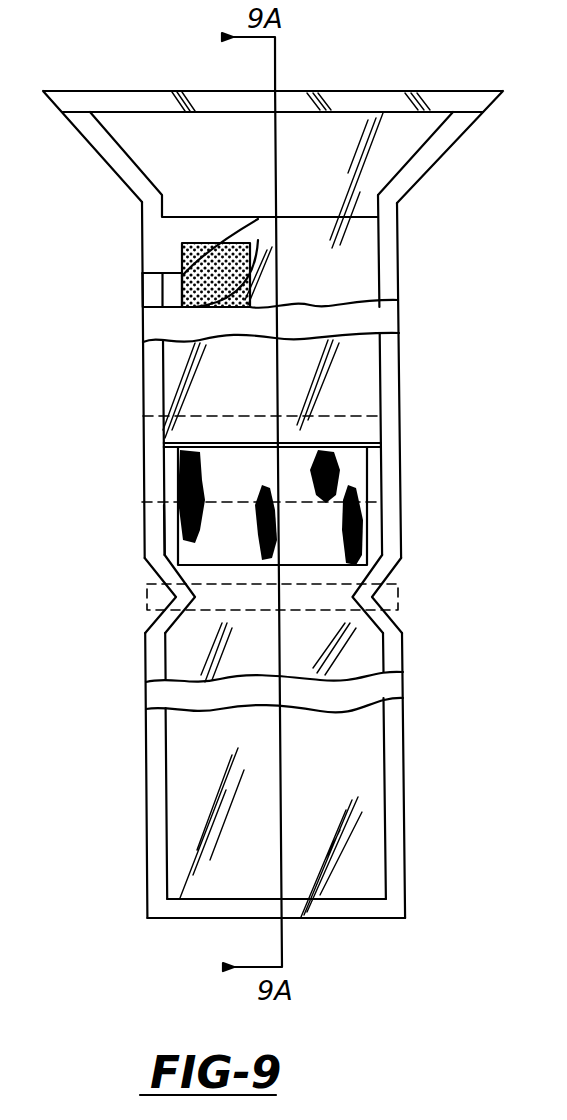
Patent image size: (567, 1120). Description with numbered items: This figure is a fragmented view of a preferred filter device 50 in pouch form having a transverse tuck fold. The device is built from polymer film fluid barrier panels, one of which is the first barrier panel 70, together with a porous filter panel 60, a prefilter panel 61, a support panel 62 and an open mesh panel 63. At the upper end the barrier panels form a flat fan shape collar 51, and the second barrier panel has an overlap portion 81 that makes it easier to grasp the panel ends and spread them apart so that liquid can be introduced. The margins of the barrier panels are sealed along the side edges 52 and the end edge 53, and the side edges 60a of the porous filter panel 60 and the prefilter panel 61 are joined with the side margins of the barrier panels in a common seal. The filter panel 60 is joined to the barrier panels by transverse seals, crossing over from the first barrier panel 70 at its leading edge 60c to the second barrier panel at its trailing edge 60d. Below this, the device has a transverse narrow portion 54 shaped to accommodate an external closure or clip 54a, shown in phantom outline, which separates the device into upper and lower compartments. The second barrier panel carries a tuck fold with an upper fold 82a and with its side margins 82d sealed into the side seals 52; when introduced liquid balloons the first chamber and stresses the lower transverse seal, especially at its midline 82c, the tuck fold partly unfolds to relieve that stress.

The filter device 50 is at (402, 264).
The fan shape collar 51 is at (342, 125).
The side edges 52 is at (440, 143).
The end edge 53 is at (330, 912).
The transverse narrow portion 54 is at (153, 622).
The closure or clip 54a is at (400, 578).
The porous filter panel 60 is at (203, 228).
The side edges of the porous filter panel 60a is at (155, 270).
The leading edge 60c is at (252, 210).
The trailing edge 60d is at (163, 448).
The prefilter panel 61 is at (153, 237).
The support panel 62 is at (147, 285).
The open mesh panel 63 is at (190, 304).
The first polymer film fluid barrier panel 70 is at (167, 527).
The overlap portion 81 is at (423, 100).
The upper fold 82a is at (350, 412).
The midline 82c is at (283, 563).
The side margins of the tuck fold 82d is at (403, 487).